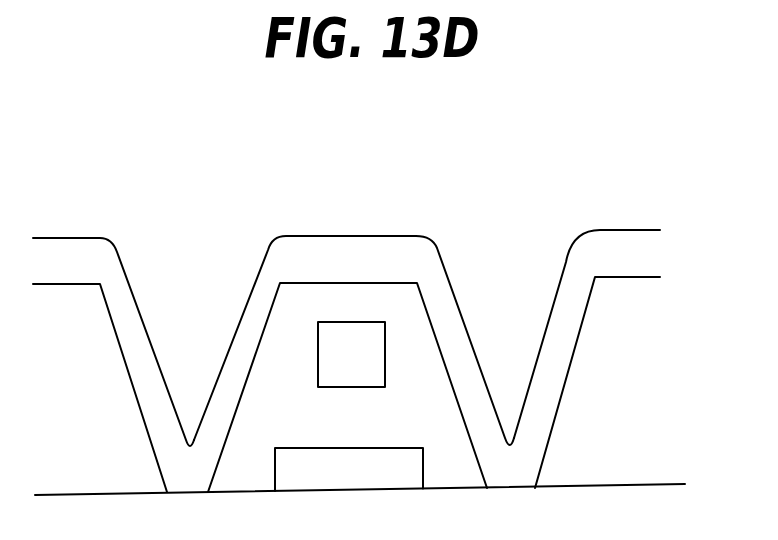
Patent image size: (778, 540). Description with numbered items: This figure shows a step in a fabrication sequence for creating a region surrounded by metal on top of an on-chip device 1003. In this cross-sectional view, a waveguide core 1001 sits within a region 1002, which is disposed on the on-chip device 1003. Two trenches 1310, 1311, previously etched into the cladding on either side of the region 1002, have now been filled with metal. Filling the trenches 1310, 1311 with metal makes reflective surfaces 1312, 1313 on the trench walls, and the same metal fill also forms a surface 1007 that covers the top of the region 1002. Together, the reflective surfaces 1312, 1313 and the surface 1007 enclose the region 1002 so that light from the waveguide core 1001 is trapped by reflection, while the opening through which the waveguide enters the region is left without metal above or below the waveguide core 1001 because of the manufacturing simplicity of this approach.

The waveguide core 1001 is at (326, 366).
The region 1002 is at (327, 431).
The on-chip device 1003 is at (327, 483).
The surface 1007 is at (324, 270).
The trench 1310 is at (166, 354).
The trench 1311 is at (480, 350).
The reflective surface 1312 is at (260, 316).
The reflective surface 1313 is at (437, 311).